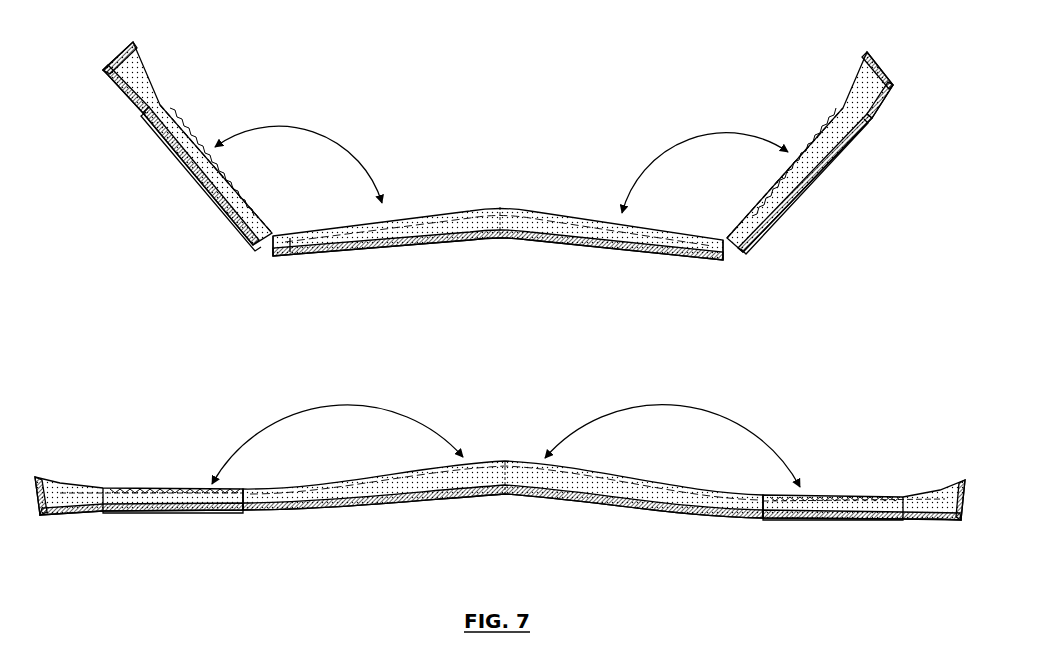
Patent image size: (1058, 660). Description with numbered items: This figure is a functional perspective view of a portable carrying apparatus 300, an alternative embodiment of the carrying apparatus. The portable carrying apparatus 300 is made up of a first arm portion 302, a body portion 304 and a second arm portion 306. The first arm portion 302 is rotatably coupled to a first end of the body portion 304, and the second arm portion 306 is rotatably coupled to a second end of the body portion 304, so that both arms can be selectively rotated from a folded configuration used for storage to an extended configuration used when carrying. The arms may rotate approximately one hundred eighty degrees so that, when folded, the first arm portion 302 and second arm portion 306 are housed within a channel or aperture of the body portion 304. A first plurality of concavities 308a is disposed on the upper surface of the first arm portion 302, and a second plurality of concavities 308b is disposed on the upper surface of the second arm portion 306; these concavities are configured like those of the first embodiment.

The portable carrying apparatus 300 is at (475, 95).
The first arm portion 302 is at (204, 116).
The body portion 304 is at (496, 194).
The second arm portion 306 is at (763, 126).
The first plurality of concavities 308a is at (197, 178).
The second plurality of concavities 308b is at (817, 175).